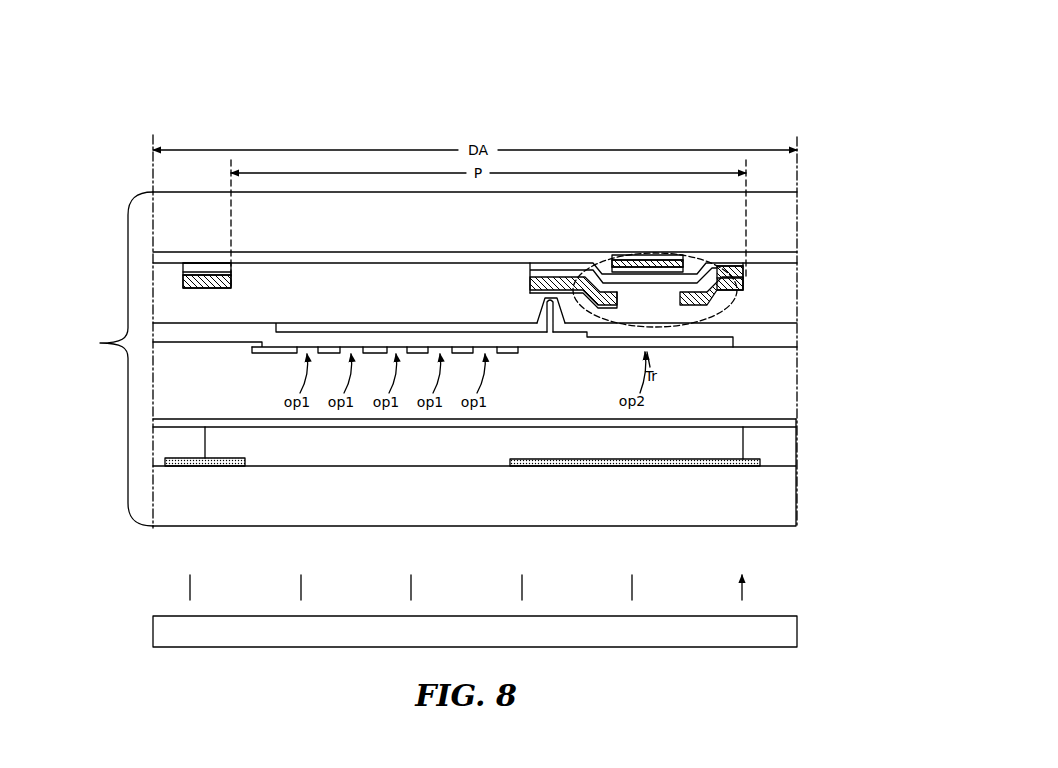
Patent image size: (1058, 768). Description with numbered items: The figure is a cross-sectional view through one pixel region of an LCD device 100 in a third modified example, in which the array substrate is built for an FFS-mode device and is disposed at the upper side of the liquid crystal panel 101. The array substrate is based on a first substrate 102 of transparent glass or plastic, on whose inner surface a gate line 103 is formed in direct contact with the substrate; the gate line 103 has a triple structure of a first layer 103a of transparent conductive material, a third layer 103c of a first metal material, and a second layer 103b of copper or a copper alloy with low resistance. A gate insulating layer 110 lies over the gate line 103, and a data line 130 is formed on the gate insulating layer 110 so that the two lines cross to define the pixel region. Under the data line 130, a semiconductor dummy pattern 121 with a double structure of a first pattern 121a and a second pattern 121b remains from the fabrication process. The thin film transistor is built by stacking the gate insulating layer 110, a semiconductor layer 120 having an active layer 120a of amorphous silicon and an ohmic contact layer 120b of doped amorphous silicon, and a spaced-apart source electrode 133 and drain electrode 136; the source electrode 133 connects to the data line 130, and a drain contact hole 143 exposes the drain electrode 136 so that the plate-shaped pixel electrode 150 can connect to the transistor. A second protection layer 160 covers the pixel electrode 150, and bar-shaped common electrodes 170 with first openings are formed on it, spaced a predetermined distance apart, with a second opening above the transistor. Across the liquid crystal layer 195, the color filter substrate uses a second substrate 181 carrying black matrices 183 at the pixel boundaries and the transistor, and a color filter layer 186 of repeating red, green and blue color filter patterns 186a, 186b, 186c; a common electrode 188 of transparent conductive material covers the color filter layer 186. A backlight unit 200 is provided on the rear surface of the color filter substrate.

The LCD device 100 is at (760, 110).
The liquid crystal panel 101 is at (106, 359).
The first substrate 102 is at (788, 236).
The gate line 103 is at (709, 206).
The first layer 103a is at (648, 258).
The second layer 103b is at (655, 269).
The third layer 103c is at (652, 263).
The gate insulating layer 110 is at (400, 262).
The semiconductor layer 120 is at (737, 339).
The active layer 120a is at (747, 290).
The ohmic contact layer 120b is at (723, 292).
The semiconductor dummy pattern 121 is at (250, 383).
The first pattern 121a is at (222, 275).
The second pattern 121b is at (198, 290).
The data line 130 is at (183, 290).
The source electrode 133 is at (687, 310).
The drain electrode 136 is at (642, 312).
The drain contact hole 143 is at (551, 322).
The pixel electrode 150 is at (408, 328).
The second protection layer 160 is at (448, 340).
The common electrode 170 is at (283, 354).
The second substrate 181 is at (788, 511).
The black matrix 183 is at (573, 459).
The color filter layer 186 is at (305, 558).
The red color filter pattern 186a is at (375, 458).
The green color filter pattern 186b is at (757, 445).
The blue color filter pattern 186c is at (190, 447).
The common electrode 188 is at (283, 427).
The liquid crystal layer 195 is at (786, 380).
The backlight unit 200 is at (798, 632).